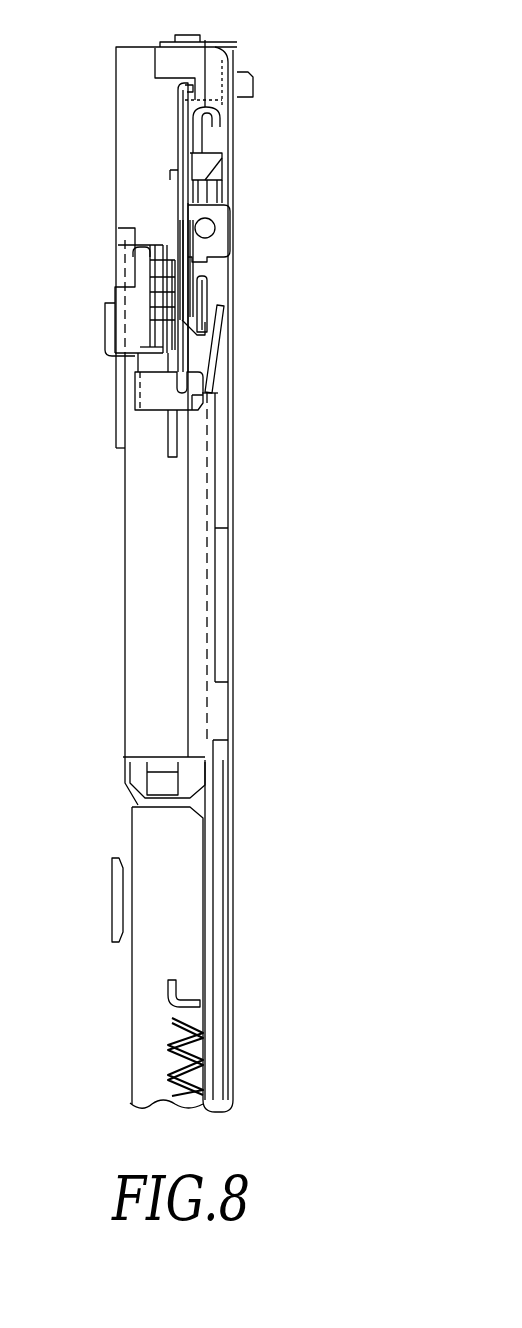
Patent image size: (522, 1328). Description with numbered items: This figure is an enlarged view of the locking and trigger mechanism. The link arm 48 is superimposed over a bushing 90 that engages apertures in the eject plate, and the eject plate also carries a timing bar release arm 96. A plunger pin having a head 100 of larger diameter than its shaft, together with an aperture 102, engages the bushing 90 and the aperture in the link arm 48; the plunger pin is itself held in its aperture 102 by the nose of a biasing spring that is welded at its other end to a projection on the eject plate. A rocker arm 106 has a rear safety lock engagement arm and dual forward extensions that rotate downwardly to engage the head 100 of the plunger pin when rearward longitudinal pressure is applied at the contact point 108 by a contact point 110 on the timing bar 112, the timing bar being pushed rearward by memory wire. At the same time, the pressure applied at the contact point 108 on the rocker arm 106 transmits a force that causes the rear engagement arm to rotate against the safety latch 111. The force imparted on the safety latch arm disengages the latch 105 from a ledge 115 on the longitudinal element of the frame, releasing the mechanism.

The link arm 48 is at (118, 433).
The bushing 90 is at (130, 250).
The timing bar release arm 96 is at (157, 387).
The head 100 is at (212, 341).
The aperture 102 is at (205, 340).
The latch 105 is at (191, 84).
The rocker arm 106 is at (217, 233).
The contact point 108 is at (213, 164).
The contact point 110 is at (216, 361).
The safety latch 111 is at (180, 137).
The timing bar 112 is at (218, 603).
The ledge 115 is at (186, 100).